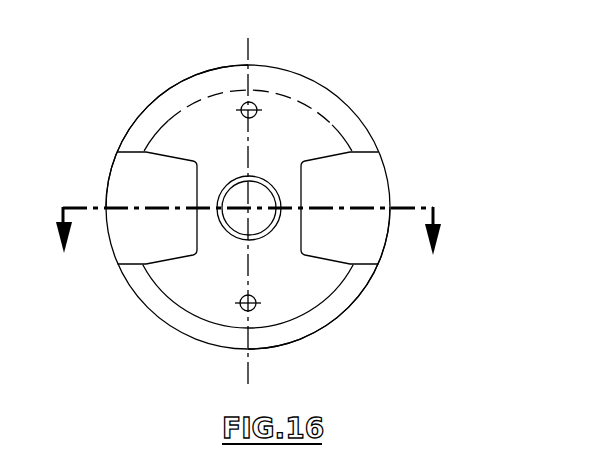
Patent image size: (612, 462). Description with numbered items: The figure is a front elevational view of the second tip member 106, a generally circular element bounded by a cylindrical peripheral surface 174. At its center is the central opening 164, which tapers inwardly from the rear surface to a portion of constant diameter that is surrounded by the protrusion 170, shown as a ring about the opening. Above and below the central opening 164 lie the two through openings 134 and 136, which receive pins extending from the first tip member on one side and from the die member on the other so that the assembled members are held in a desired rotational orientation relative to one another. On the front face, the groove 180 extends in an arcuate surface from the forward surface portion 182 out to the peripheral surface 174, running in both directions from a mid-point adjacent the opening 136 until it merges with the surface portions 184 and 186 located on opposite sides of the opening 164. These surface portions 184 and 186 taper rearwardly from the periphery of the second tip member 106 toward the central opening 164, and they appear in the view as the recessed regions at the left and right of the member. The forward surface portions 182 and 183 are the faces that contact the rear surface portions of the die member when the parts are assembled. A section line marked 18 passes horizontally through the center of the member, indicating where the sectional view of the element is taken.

The second tip member 106 is at (380, 100).
The cylindrical peripheral surface 174 is at (163, 88).
The groove 180 is at (303, 327).
The forward surface portion 183 is at (187, 128).
The forward surface portion 182 is at (168, 274).
The surface portion 184 is at (143, 170).
The surface portion 186 is at (368, 171).
The through opening 134 is at (244, 92).
The through opening 136 is at (233, 319).
The central opening 164 is at (266, 188).
The protrusion 170 is at (233, 238).
The section line 18- 18 is at (250, 248).